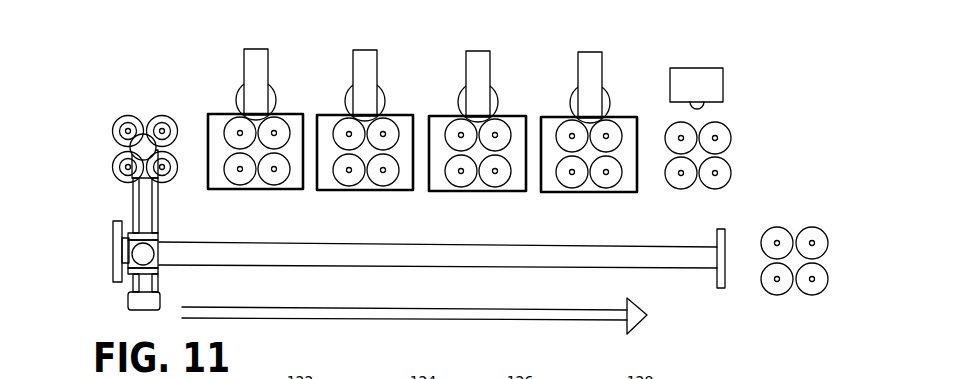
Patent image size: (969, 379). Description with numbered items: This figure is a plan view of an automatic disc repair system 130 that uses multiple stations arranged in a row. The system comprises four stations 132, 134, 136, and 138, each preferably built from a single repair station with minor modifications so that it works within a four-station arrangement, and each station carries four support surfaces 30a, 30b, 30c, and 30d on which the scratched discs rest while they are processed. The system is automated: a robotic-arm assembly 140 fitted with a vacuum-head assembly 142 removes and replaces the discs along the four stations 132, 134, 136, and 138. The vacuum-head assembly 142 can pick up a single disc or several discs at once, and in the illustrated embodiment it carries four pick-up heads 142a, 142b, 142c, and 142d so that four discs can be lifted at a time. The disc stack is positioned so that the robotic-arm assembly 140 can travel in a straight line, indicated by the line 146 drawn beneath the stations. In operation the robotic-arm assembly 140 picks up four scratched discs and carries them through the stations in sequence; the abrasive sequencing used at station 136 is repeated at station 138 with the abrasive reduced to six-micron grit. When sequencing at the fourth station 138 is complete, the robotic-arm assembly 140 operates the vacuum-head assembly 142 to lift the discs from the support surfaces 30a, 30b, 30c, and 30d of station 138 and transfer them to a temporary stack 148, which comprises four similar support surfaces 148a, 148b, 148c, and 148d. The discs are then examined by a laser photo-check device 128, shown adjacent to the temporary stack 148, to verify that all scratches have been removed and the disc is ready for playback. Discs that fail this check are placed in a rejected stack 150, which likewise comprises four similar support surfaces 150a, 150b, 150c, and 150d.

The automatic disc repair system 130 is at (720, 338).
The robotic-arm assembly 140 is at (124, 198).
The vacuum-head assembly 142 is at (116, 137).
The pick-up head 142a is at (170, 182).
The pick-up head 142b is at (170, 115).
The pick-up head 142c is at (118, 114).
The pick-up head 142d is at (113, 164).
The station 132 is at (255, 115).
The station 134 is at (412, 110).
The station 136 is at (529, 110).
The station 138 is at (637, 110).
The support surface 30a is at (278, 190).
The support surface 30b is at (283, 113).
The support surface 30c is at (228, 114).
The support surface 30d is at (226, 190).
The laser photo-check device 128 is at (723, 76).
The temporary stack 148 is at (703, 160).
The support surface 148a is at (718, 188).
The support surface 148b is at (731, 120).
The support surface 148c is at (667, 124).
The support surface 148d is at (667, 187).
The rejected stack 150 is at (796, 255).
The support surface 150a is at (818, 297).
The support surface 150b is at (828, 248).
The support surface 150c is at (772, 296).
The support surface 150d is at (762, 218).
The line 146 is at (516, 320).